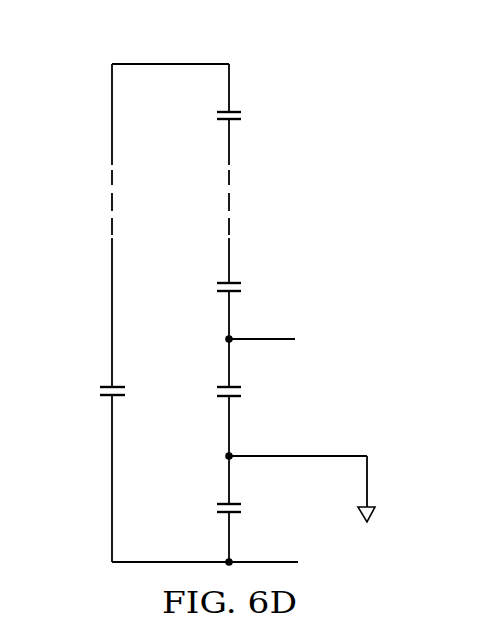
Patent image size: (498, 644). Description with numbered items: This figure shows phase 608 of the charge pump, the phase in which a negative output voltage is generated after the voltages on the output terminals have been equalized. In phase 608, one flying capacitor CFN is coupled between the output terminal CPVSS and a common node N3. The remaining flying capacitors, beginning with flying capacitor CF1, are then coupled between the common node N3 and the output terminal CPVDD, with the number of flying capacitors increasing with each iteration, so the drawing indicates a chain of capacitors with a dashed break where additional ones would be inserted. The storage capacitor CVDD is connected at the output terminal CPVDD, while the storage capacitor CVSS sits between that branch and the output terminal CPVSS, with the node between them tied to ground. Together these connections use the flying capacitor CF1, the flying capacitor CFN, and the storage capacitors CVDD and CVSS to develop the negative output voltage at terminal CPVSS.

The phase 608 is at (354, 91).
The common node N3 is at (170, 50).
The flying capacitor CF1 is at (249, 287).
The flying capacitor CFN is at (90, 392).
The output terminal CPVDD is at (295, 341).
The storage capacitor CVDD is at (258, 393).
The storage capacitor CVSS is at (258, 510).
The output terminal CPVSS is at (295, 563).